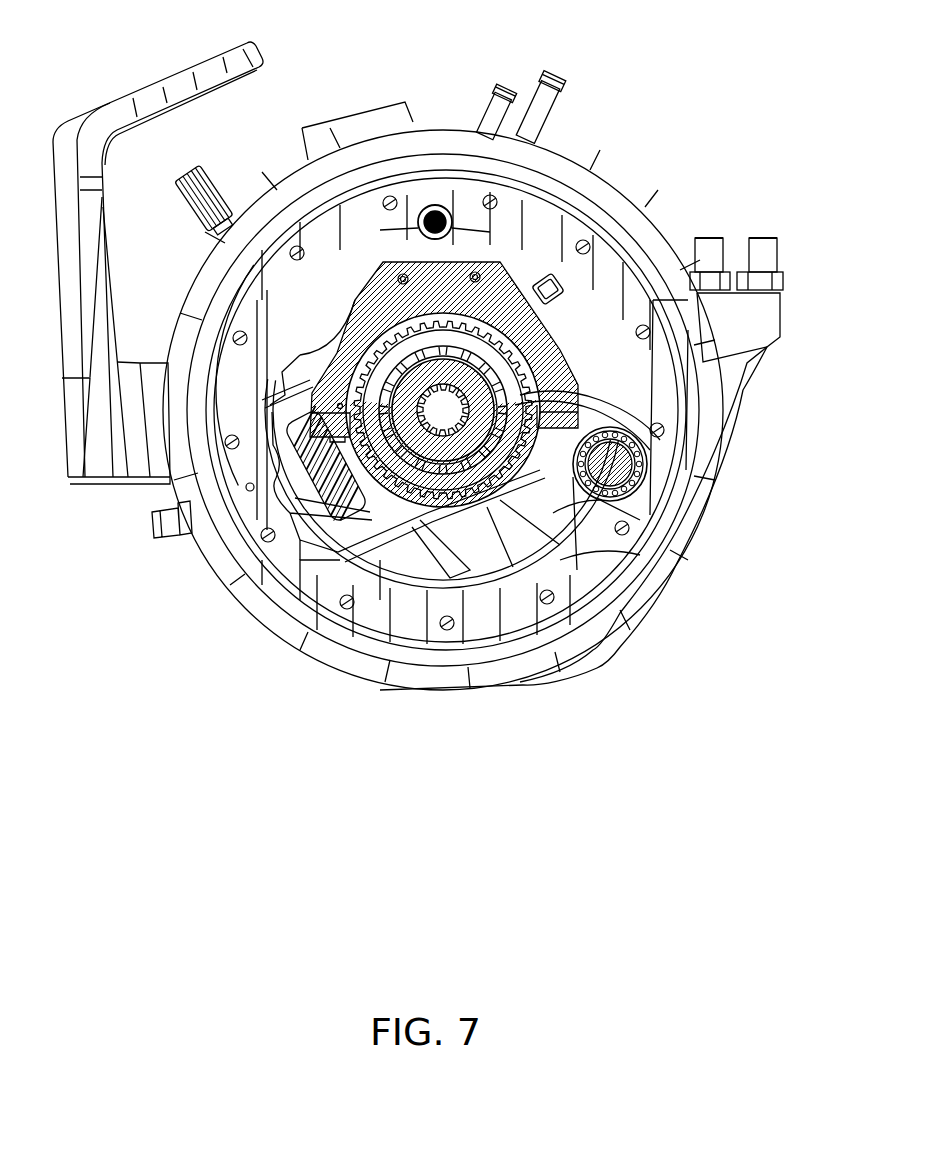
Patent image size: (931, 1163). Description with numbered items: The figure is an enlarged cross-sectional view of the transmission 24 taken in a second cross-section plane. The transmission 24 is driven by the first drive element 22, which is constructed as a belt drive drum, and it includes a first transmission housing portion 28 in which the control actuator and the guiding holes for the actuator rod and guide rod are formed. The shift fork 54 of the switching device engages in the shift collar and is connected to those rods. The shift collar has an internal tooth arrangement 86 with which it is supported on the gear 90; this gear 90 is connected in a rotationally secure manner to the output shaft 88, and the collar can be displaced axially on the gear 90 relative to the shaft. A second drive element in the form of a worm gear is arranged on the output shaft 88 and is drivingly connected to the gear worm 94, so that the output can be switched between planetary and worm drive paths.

The first drive element 22 is at (637, 203).
The transmission 24 is at (160, 229).
The first transmission housing portion 28 is at (648, 383).
The shift fork 54 is at (548, 276).
The internal tooth arrangement 86 is at (507, 478).
The output shaft 88 is at (435, 448).
The gear 90 is at (420, 470).
The gear worm 94 is at (330, 478).